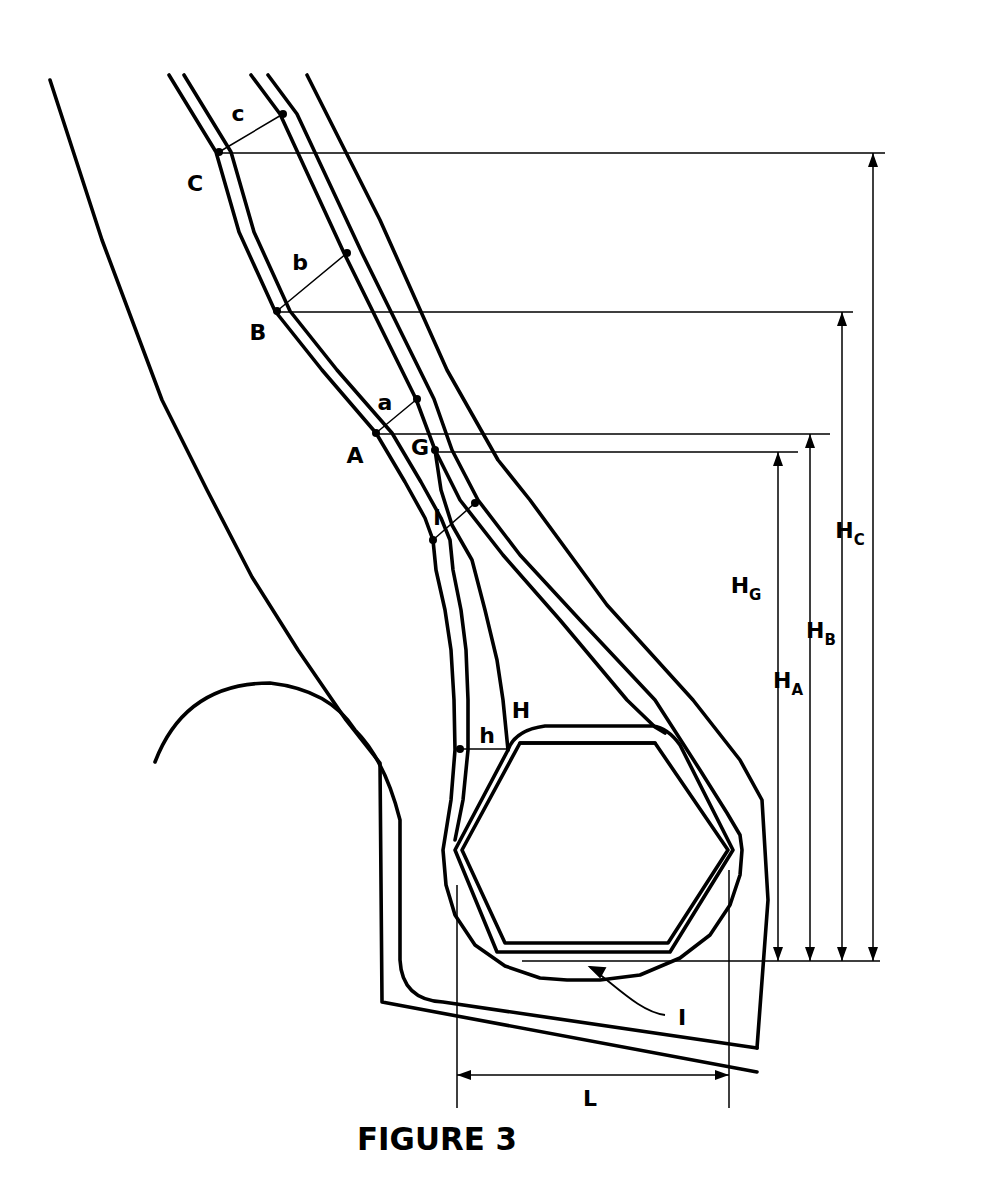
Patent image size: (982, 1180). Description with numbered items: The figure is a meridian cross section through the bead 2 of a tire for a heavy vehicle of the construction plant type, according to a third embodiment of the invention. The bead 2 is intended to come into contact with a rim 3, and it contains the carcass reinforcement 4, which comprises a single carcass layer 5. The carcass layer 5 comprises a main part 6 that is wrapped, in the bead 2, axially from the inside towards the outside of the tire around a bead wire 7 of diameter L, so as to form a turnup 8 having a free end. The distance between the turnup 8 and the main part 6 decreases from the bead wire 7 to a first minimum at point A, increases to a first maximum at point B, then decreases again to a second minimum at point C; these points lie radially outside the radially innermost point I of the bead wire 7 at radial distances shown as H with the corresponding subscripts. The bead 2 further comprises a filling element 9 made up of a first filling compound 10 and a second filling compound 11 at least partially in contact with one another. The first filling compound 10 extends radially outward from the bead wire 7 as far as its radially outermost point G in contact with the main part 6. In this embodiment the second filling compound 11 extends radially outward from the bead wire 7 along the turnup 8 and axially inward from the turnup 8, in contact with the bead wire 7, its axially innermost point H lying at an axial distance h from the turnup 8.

The bead 2 is at (458, 290).
The rim 3 is at (283, 690).
The carcass reinforcement 4 is at (307, 143).
The carcass layer 5 is at (290, 92).
The main part 6 is at (330, 223).
The bead wire 7 is at (681, 778).
The turnup 8 is at (243, 257).
The filling element 9 is at (357, 348).
The first filling compound 10 is at (558, 663).
The second filling compound 11 is at (485, 662).